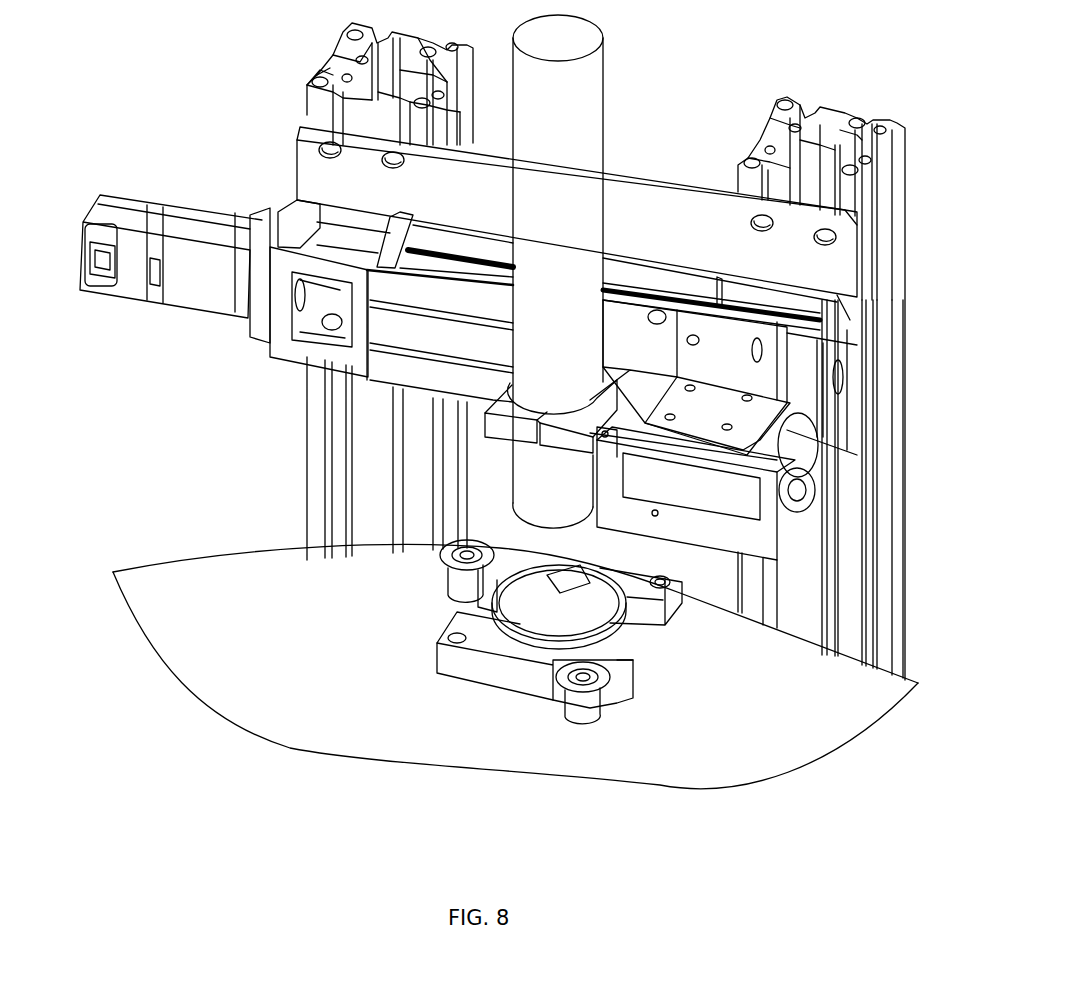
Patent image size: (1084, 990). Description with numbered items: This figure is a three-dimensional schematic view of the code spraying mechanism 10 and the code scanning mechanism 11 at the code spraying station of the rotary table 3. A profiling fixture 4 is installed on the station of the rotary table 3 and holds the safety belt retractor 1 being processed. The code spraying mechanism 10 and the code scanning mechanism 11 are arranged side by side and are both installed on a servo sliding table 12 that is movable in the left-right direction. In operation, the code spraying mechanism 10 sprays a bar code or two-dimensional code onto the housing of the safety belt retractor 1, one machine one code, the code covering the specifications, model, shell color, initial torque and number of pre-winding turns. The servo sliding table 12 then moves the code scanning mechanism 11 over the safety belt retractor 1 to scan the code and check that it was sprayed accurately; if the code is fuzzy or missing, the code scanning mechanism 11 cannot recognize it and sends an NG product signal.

The safety belt retractor 1 is at (523, 618).
The rotary table 3 is at (726, 755).
The profiling fixture 4 is at (545, 662).
The code spraying mechanism 10 is at (559, 478).
The code scanning mechanism 11 is at (717, 512).
The servo sliding table 12 is at (397, 325).